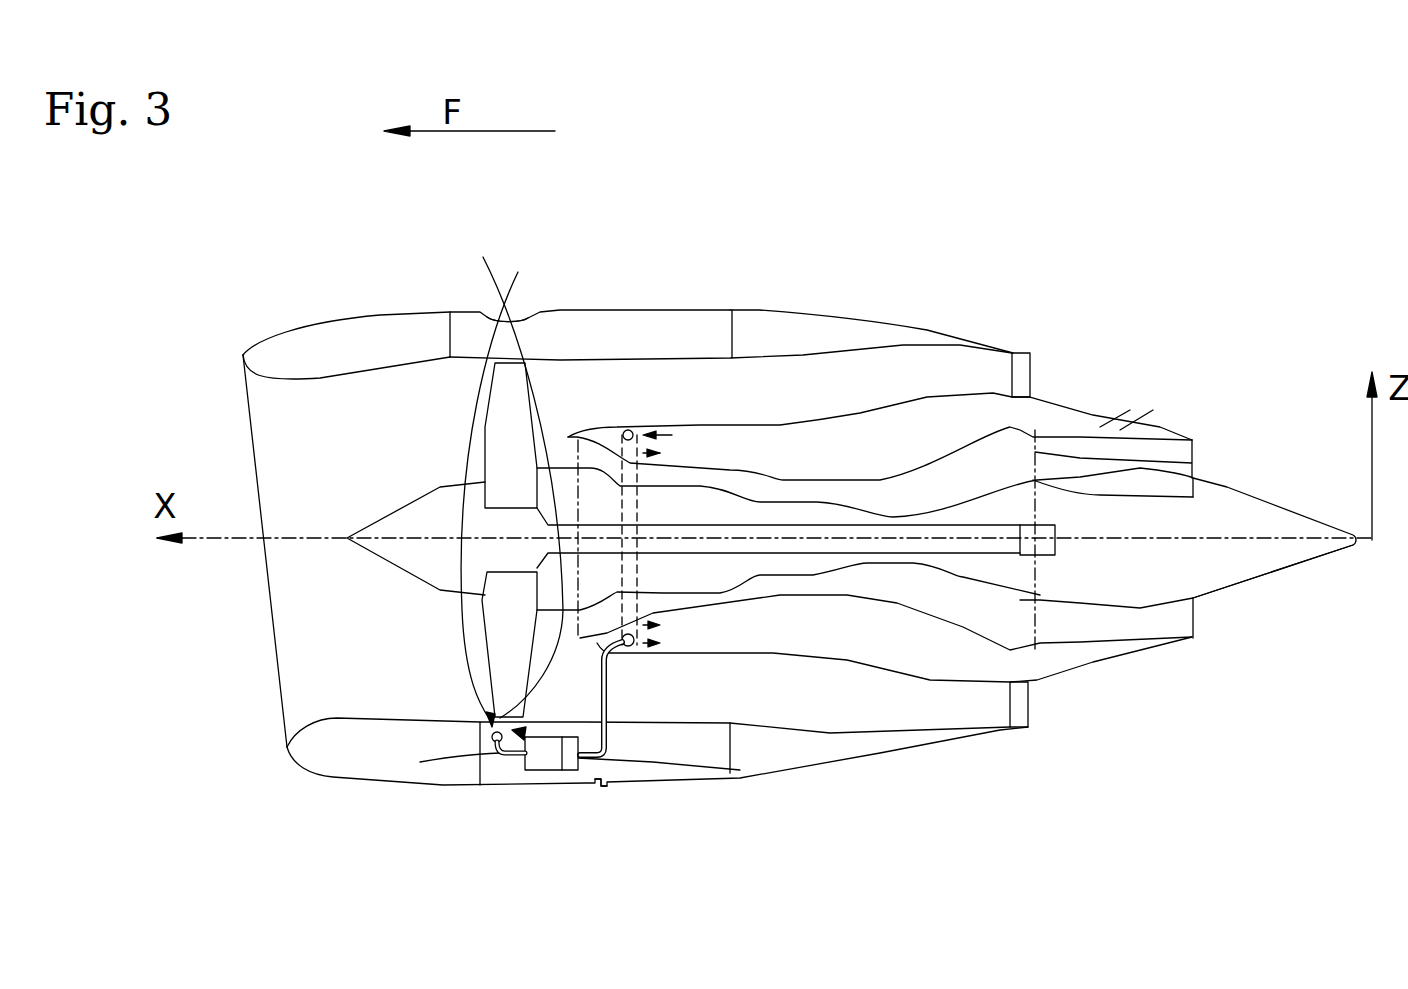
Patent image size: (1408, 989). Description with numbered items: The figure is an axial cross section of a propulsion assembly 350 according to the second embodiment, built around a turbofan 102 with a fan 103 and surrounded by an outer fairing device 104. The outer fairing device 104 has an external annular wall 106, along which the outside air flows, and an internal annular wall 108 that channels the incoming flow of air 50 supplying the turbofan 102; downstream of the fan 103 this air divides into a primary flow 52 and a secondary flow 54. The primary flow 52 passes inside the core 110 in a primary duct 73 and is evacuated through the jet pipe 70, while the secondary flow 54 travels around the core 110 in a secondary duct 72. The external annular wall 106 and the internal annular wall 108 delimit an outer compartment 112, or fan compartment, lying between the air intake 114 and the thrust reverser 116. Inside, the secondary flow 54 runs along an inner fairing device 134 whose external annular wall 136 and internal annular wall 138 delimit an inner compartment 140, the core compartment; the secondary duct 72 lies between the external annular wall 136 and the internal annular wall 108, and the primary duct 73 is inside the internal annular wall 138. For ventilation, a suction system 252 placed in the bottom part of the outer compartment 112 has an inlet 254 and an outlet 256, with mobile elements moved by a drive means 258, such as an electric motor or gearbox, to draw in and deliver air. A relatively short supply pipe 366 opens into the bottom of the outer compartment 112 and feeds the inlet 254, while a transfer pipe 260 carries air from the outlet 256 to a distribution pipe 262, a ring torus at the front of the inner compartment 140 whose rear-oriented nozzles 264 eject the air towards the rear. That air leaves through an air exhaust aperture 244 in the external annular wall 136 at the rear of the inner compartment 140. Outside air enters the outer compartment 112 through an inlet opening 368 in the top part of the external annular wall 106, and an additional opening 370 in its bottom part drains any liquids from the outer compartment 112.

The incoming flow of air 50 is at (352, 440).
The primary flow 52 is at (618, 467).
The secondary flow 54 is at (697, 408).
The jet pipe 70 is at (1183, 617).
The secondary duct 72 is at (980, 707).
The primary duct 73 is at (1193, 497).
The turbofan 102 is at (1229, 787).
The fan 103 is at (493, 637).
The outer fairing device 104 is at (688, 168).
The external annular wall 106 is at (338, 777).
The internal annular wall 108 is at (337, 717).
The core 110 is at (1238, 641).
The outer compartment 112 is at (463, 318).
The air intake 114 is at (277, 368).
The thrust reverser 116 is at (910, 333).
The inner fairing device 134 is at (857, 417).
The external annular wall 136 is at (963, 393).
The internal annular wall 138 is at (1195, 463).
The inner compartment 140 is at (787, 430).
The air exhaust aperture 244 is at (1130, 413).
The suction system 252 is at (547, 757).
The inlet 254 is at (500, 745).
The outlet 256 is at (653, 762).
The drive means 258 is at (587, 780).
The transfer pipe 260 is at (607, 692).
The distribution pipe 262 is at (627, 430).
The nozzles 264 is at (637, 432).
The propulsion assembly 350 is at (1166, 193).
The supply pipe 366 is at (477, 727).
The inlet opening 368 is at (487, 315).
The additional opening 370 is at (601, 787).